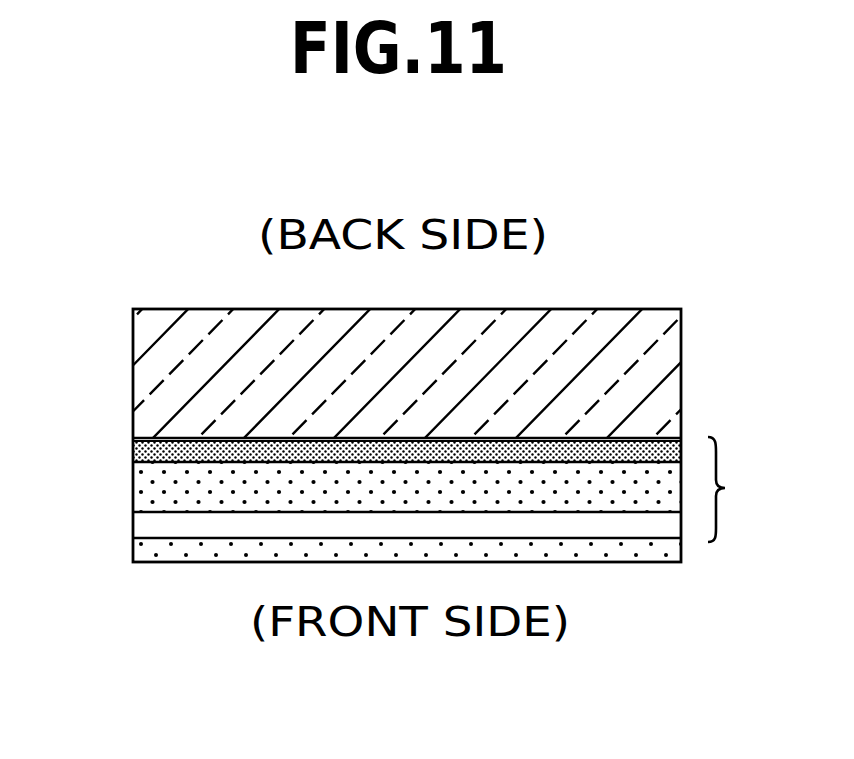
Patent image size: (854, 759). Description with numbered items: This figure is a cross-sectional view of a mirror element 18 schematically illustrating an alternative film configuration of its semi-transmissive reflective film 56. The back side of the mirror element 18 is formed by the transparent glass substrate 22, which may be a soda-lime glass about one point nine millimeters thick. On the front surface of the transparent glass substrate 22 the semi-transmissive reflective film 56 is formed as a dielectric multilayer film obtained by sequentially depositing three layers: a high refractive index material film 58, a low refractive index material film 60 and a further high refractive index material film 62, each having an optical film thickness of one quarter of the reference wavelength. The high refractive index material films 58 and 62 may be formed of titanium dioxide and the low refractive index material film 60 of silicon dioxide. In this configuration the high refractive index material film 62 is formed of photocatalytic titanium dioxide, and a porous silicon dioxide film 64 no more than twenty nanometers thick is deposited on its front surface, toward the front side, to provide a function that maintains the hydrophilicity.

The mirror element 18 is at (642, 248).
The transparent glass substrate 22 is at (147, 374).
The semi-transmissive reflective film 56 is at (744, 489).
The high refractive index material film 58 is at (136, 447).
The low refractive index material film 60 is at (138, 492).
The high refractive index material film 62 is at (135, 530).
The porous SiO2 film 64 is at (162, 549).